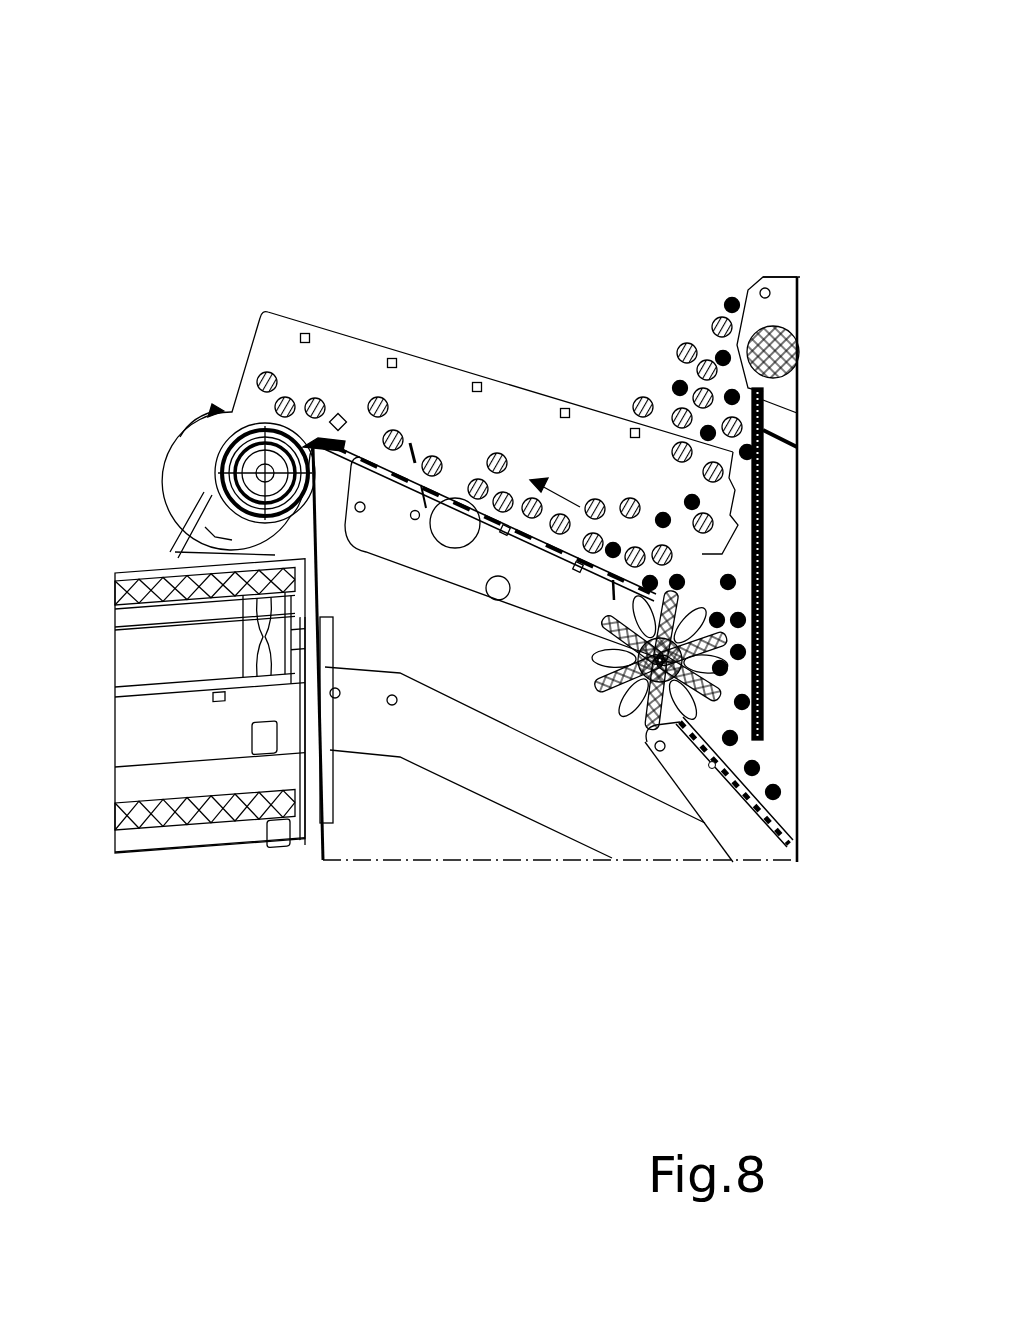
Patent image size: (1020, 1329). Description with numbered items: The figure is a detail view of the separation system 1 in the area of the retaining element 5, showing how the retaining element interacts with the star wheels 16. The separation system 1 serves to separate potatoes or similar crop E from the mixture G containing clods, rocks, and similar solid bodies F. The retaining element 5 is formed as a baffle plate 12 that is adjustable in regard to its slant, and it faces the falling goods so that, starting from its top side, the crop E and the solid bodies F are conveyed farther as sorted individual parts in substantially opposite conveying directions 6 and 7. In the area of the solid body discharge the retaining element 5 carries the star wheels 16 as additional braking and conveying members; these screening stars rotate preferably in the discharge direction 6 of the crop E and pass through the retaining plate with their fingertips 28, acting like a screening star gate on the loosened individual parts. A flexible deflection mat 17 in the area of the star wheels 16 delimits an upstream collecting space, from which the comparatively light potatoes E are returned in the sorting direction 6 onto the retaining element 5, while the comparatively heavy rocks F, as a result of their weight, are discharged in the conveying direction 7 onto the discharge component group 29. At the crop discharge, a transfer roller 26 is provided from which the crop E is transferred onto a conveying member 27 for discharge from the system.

The separation system 1 is at (447, 95).
The retaining element 5 is at (412, 437).
The conveying direction 6 is at (560, 495).
The conveying direction 7 is at (702, 554).
The baffle plate 12 is at (545, 540).
The star wheels 16 is at (626, 734).
The deflection mat 17 is at (760, 660).
The transfer roller 26 is at (222, 476).
The conveying member 27 is at (105, 708).
The fingertips 28 is at (697, 598).
The discharge component group 29 is at (770, 870).
The crop E is at (392, 402).
The solid bodies F is at (755, 766).
The mixture G is at (758, 252).